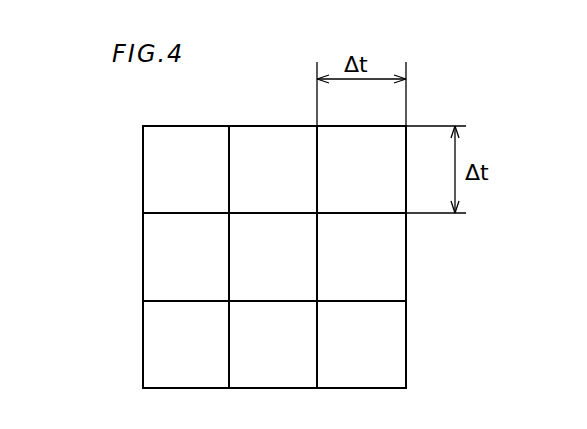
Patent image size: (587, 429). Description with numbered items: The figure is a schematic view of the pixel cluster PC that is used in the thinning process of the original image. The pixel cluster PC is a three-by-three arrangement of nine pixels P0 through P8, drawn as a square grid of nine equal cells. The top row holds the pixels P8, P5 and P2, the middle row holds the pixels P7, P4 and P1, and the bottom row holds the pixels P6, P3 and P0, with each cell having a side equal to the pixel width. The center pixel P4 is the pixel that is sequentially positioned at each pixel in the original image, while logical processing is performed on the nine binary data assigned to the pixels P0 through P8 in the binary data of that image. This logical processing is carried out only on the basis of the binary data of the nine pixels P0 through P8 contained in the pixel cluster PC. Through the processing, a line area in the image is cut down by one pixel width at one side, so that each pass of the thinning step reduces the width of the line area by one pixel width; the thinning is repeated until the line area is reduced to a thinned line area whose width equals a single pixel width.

The pixel cluster PC is at (143, 168).
The pixel P0 is at (361, 344).
The pixel P1 is at (361, 257).
The pixel P2 is at (361, 169).
The pixel P3 is at (273, 344).
The center pixel P4 is at (273, 257).
The pixel P5 is at (273, 169).
The pixel P6 is at (186, 344).
The pixel P7 is at (186, 257).
The pixel P8 is at (186, 169).